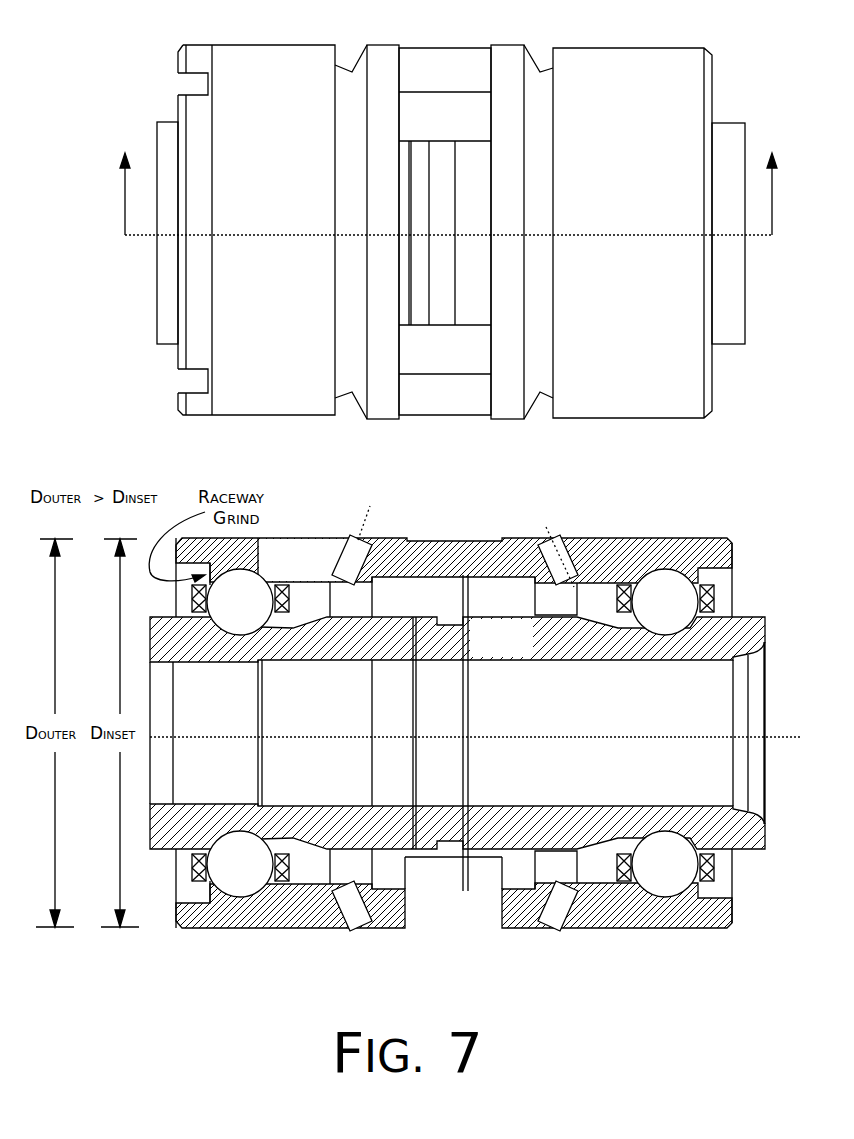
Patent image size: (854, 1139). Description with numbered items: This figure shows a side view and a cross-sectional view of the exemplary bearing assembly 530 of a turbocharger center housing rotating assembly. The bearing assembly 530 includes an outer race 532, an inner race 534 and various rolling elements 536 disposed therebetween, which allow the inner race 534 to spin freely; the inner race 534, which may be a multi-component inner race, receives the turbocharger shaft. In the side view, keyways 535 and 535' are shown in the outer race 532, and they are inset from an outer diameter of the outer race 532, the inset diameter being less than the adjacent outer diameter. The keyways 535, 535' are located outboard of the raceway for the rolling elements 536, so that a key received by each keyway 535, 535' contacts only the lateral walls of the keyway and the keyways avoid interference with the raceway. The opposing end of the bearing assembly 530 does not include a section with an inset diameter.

The bearing assembly 530 is at (648, 29).
The outer race 532 is at (285, 169).
The inner race 534 is at (470, 365).
The keyway 535 is at (155, 76).
The keyway 535' is at (155, 386).
The rolling elements 536 is at (262, 614).